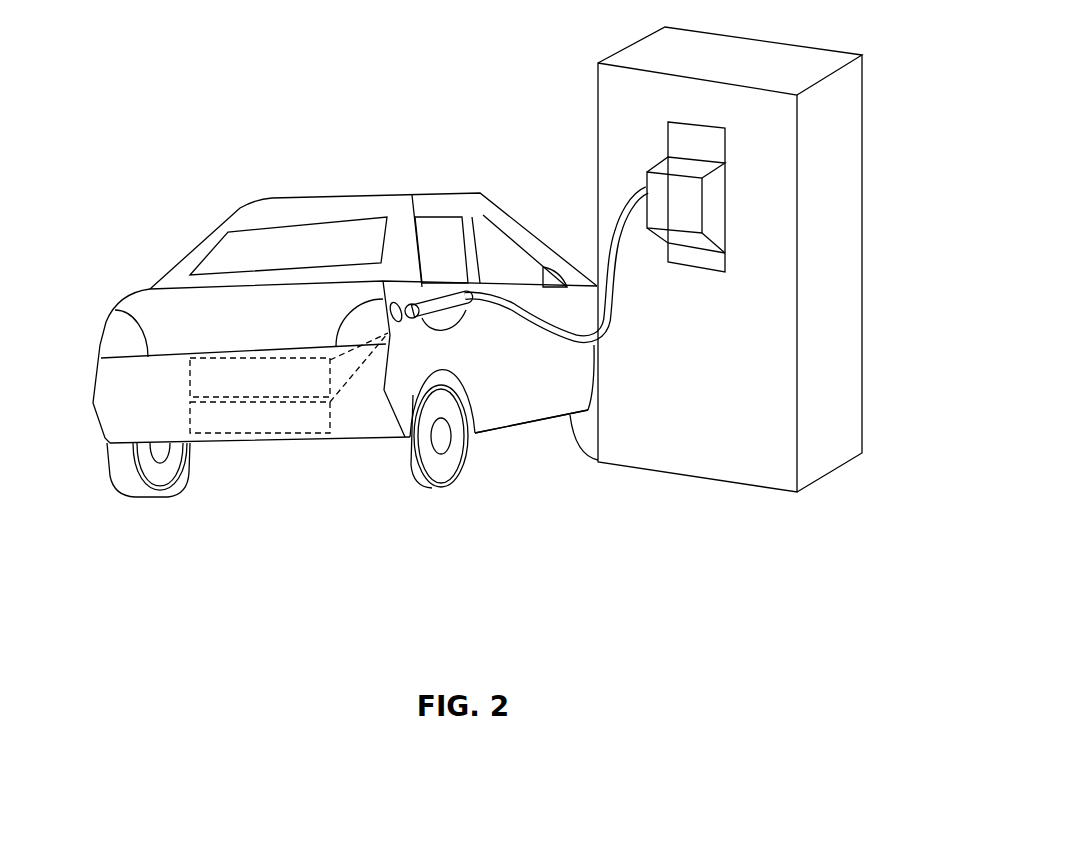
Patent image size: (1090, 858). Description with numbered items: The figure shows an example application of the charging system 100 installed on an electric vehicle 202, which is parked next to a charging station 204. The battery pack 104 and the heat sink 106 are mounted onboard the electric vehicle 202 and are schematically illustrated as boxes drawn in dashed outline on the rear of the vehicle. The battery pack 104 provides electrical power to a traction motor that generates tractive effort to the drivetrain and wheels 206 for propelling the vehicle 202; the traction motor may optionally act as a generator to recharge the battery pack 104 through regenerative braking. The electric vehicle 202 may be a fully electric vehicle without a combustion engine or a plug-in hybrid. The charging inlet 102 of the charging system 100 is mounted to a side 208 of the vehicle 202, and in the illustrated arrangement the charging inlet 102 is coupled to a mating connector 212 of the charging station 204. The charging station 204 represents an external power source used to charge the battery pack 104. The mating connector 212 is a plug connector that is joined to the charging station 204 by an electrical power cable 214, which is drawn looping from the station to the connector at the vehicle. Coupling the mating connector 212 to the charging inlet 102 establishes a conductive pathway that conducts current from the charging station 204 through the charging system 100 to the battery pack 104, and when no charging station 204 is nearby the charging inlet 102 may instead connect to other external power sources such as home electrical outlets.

The charging system 100 is at (299, 413).
The charging inlet 102 is at (412, 305).
The battery pack 104 is at (238, 387).
The heat sink 106 is at (238, 428).
The electric vehicle 202 is at (312, 196).
The charging station 204 is at (852, 150).
The wheels 206 is at (128, 468).
The side 208 is at (523, 380).
The mating connector 212 is at (442, 303).
The electrical power cable 214 is at (520, 310).